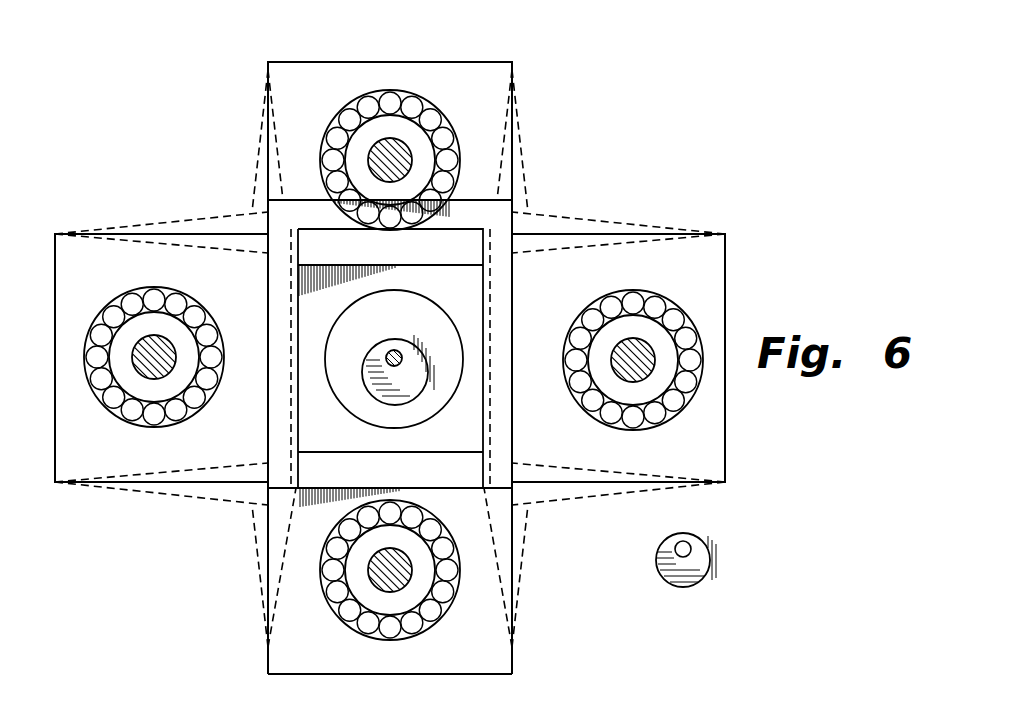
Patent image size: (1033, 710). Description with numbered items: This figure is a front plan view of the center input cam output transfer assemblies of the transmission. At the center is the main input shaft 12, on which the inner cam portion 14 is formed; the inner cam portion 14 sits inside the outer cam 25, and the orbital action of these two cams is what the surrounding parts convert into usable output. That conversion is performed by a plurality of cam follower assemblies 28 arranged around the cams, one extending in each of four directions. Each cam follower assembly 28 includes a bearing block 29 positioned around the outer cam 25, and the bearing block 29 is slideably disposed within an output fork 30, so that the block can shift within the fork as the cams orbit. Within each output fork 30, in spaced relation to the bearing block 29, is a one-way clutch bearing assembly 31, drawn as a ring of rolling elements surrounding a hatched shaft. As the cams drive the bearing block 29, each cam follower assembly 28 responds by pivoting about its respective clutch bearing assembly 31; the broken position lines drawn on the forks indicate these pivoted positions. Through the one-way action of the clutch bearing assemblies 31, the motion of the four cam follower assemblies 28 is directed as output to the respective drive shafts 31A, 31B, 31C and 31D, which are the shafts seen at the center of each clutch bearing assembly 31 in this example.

The main input shaft 12 is at (384, 365).
The inner cam portion 14 is at (401, 382).
The outer cam 25 is at (447, 338).
The cam follower assembly 28 is at (495, 91).
The bearing block 29 is at (458, 290).
The output fork 30 is at (284, 471).
The one-way clutch bearing assembly 31 is at (318, 134).
The drive shaft 31A is at (135, 352).
The drive shaft 31B is at (396, 160).
The drive shaft 31C is at (644, 380).
The drive shaft 31D is at (410, 574).